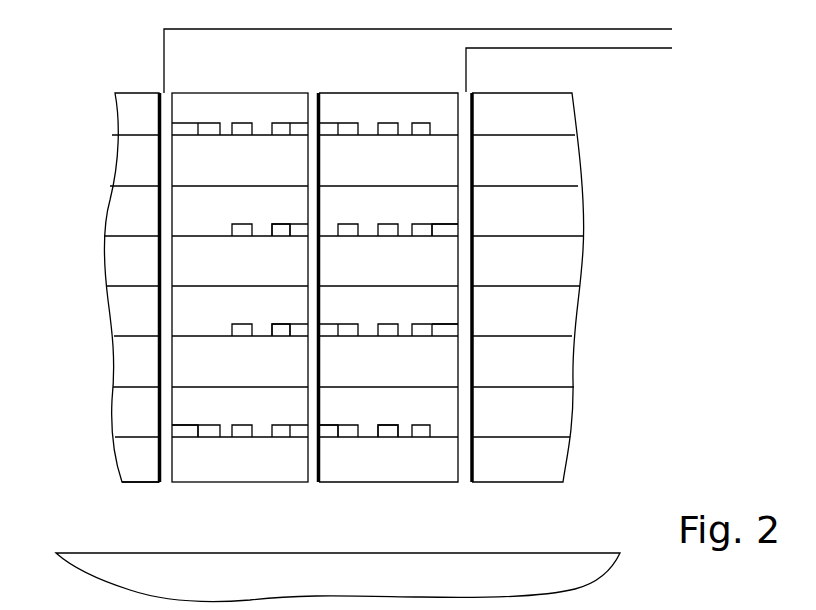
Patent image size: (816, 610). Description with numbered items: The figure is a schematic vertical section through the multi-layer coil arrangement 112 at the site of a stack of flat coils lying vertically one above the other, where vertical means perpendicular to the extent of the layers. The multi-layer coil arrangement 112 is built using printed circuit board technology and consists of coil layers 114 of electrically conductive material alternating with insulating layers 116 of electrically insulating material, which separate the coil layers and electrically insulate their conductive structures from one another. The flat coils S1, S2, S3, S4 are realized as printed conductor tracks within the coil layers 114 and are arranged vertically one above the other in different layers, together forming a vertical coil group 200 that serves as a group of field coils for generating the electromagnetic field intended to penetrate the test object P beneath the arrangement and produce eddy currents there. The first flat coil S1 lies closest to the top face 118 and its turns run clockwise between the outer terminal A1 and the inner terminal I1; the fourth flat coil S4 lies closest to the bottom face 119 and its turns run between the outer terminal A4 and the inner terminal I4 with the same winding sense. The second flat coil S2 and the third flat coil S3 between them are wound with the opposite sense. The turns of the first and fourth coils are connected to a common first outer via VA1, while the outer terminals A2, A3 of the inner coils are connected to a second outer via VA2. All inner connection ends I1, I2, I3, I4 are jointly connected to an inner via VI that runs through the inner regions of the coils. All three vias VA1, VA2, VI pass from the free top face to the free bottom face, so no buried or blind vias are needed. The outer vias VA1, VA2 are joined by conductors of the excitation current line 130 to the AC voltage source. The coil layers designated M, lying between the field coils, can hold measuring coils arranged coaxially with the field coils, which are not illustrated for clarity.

The top face 118 is at (135, 92).
The bottom face 119 is at (145, 484).
The first outer via VA1 is at (163, 92).
The inner via VI is at (313, 92).
The second outer via VA2 is at (473, 92).
The coil group 200 is at (337, 78).
The excitation current line 130 is at (687, 22).
The coil layer 114 is at (610, 137).
The insulating layer 116 is at (552, 167).
The multi-layer coil arrangement 112 is at (648, 371).
The coil layers for measuring coils M is at (93, 186).
The outer terminal of first flat coil A1 is at (190, 130).
The outer terminal of second flat coil A2 is at (445, 233).
The outer terminal of third flat coil A3 is at (445, 333).
The outer terminal of fourth flat coil A4 is at (188, 432).
The inner terminal of first flat coil I1 is at (326, 130).
The inner terminal of second flat coil I2 is at (298, 233).
The inner terminal of third flat coil I3 is at (298, 333).
The inner terminal of fourth flat coil I4 is at (332, 432).
The first flat coil S1 is at (388, 130).
The second flat coil S2 is at (420, 233).
The third flat coil S3 is at (388, 333).
The fourth flat coil S4 is at (387, 432).
The test object P is at (557, 575).